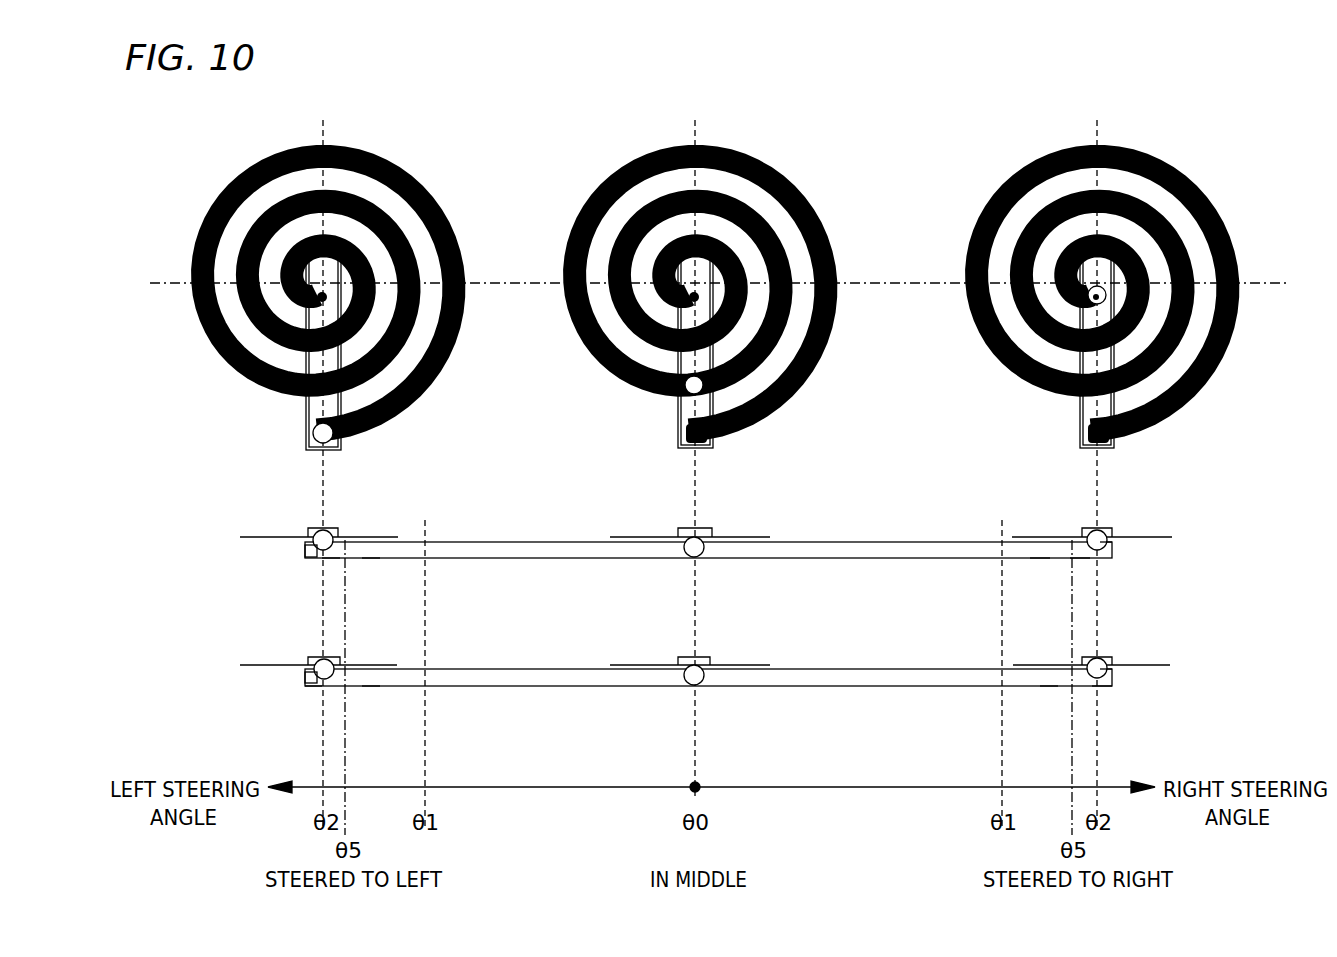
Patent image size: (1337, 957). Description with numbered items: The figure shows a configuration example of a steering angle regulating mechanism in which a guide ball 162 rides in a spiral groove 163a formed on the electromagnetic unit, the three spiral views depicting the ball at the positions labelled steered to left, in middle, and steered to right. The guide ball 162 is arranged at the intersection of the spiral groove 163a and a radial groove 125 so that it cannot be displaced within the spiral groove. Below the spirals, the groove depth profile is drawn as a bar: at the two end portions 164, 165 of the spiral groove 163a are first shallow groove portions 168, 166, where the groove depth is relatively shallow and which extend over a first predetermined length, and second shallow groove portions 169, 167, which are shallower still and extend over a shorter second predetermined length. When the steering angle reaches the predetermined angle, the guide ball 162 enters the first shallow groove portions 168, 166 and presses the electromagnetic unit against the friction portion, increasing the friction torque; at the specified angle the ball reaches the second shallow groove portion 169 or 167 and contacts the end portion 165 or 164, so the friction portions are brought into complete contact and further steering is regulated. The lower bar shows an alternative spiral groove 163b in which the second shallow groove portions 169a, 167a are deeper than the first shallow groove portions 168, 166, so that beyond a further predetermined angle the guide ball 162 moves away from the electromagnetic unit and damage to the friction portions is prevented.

The radial groove 125 is at (335, 528).
The guide ball 162 is at (333, 434).
The spiral groove 163a is at (386, 178).
The spiral groove 163b is at (497, 686).
The end portion 164 is at (326, 293).
The end portion 165 is at (313, 434).
The first shallow groove portion 166 is at (1040, 558).
The second shallow groove portion 167 is at (1080, 558).
The second shallow groove portion 167a is at (1102, 686).
The first shallow groove portion 168 is at (371, 558).
The second shallow groove portion 169 is at (330, 558).
The second shallow groove portion 169a is at (310, 686).